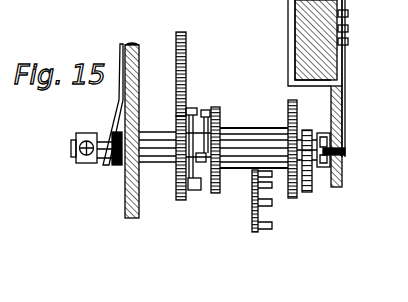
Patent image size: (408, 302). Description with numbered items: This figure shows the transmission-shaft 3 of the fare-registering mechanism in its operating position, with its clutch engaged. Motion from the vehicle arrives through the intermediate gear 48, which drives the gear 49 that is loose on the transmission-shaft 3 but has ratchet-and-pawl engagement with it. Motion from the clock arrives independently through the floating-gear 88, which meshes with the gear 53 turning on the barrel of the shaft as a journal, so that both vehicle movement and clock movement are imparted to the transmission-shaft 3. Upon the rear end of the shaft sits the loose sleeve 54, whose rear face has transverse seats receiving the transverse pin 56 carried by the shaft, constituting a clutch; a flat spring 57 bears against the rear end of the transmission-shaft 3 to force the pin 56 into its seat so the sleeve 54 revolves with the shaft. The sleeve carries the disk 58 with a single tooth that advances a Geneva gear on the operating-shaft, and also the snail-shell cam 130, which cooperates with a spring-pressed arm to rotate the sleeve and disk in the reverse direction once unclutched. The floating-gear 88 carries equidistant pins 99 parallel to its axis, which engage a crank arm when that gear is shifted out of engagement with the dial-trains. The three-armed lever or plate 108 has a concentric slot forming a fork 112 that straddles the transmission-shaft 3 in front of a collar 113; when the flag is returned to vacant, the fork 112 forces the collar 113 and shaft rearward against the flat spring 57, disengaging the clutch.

The transmission-shaft 3 is at (343, 152).
The intermediate gear 48 is at (187, 70).
The gear 49 is at (180, 200).
The gear 53 is at (250, 130).
The loose sleeve 54 is at (314, 162).
The transverse pin 56 is at (342, 186).
The flat spring 57 is at (346, 94).
The disk 58 is at (290, 103).
The floating-gear 88 is at (252, 223).
The pins 99 is at (270, 207).
The plate 108 is at (121, 48).
The fork 112 is at (111, 136).
The collar 113 is at (110, 161).
The snail-shell cam 130 is at (308, 130).